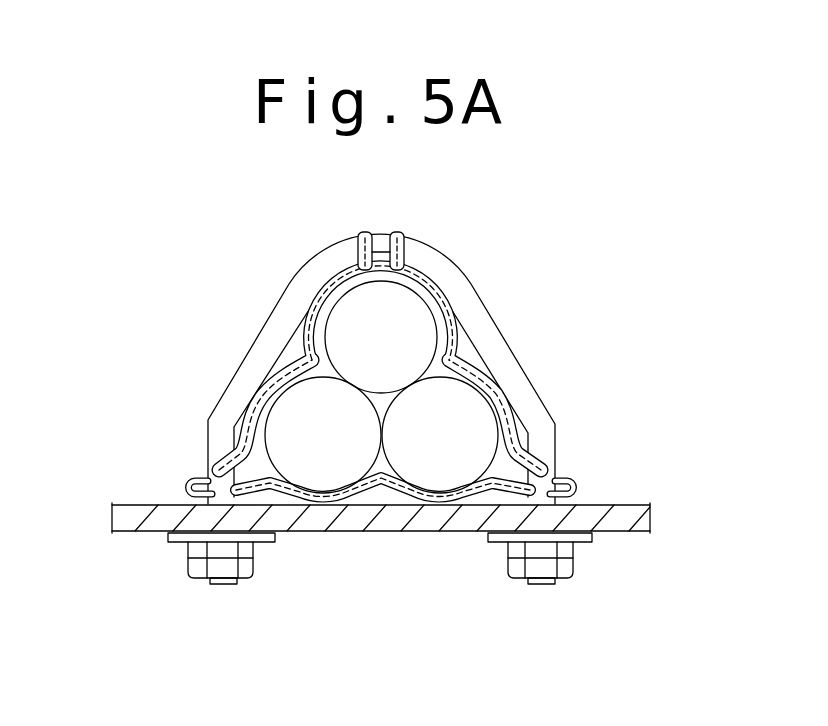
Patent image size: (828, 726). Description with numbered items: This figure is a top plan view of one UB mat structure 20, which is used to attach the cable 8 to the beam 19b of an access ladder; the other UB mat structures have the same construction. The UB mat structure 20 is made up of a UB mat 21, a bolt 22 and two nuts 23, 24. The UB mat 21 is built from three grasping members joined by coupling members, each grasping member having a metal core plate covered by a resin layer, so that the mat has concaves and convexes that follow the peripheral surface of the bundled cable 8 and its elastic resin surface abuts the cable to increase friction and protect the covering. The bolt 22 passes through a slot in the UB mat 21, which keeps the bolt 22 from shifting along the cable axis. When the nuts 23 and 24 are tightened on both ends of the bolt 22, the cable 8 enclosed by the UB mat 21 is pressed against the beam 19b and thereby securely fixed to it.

The UB mat structure 20 is at (141, 293).
The UB mat 21 is at (310, 350).
The bolt 22 is at (318, 265).
The cable 8 is at (418, 320).
The beam 19b is at (133, 506).
The nut 23 is at (225, 570).
The nut 24 is at (542, 568).